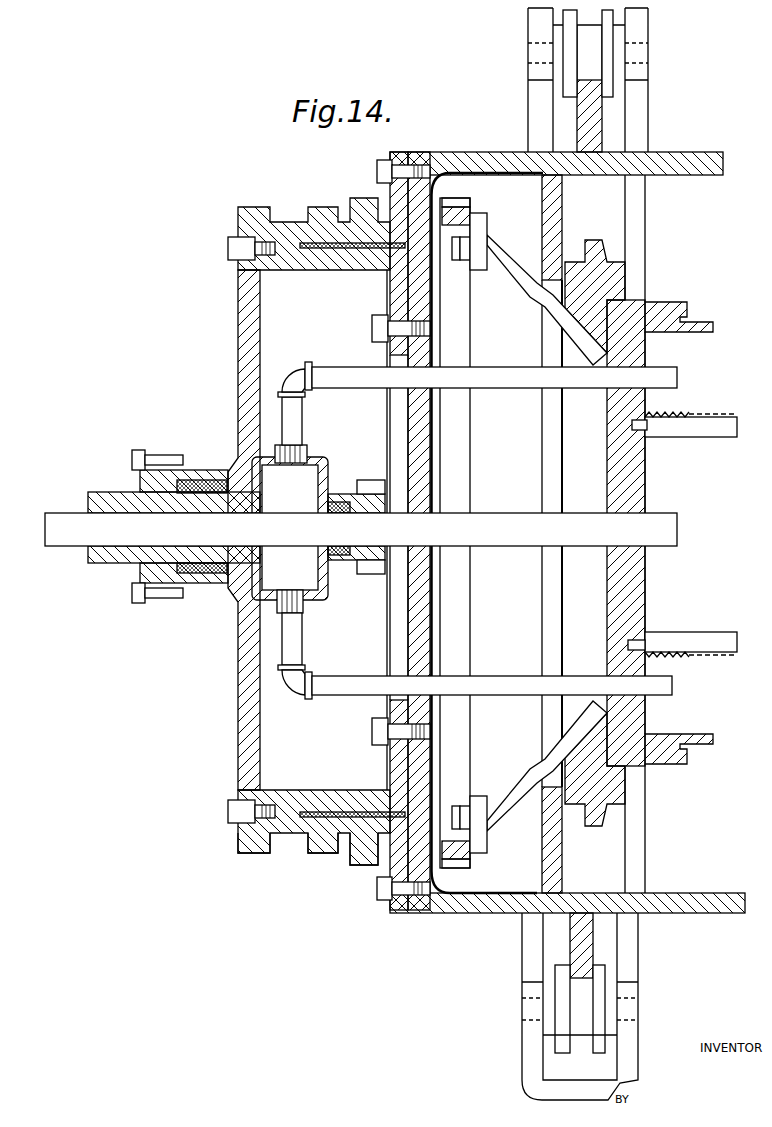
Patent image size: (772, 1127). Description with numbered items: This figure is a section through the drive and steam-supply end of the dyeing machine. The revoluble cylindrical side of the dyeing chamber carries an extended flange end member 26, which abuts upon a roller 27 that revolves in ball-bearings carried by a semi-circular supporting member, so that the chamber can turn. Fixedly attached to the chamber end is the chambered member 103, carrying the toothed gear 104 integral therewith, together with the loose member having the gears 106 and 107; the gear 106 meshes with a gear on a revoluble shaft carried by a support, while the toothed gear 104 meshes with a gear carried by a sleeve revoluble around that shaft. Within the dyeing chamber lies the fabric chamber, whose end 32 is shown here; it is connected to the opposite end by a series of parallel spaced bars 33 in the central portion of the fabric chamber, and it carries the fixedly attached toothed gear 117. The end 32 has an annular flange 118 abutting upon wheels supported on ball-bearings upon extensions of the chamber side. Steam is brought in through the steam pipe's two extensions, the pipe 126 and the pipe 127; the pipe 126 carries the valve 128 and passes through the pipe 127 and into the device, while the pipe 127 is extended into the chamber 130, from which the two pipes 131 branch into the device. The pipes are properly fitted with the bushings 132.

The extended flange end member 26 is at (600, 122).
The roller 27 is at (572, 38).
The end 32 is at (645, 583).
The parallel spaced bar 33 is at (712, 432).
The chambered member 103 is at (243, 315).
The toothed gear 104 is at (250, 855).
The gear 106 is at (297, 858).
The gear 107 is at (352, 868).
The toothed gear 117 is at (460, 860).
The annular flange 118 is at (602, 813).
The pipe 126 is at (72, 547).
The pipe 127 is at (112, 548).
The valve 128 is at (525, 1043).
The chamber 130 is at (290, 529).
The pipe 131 is at (356, 390).
The bushing 132 is at (199, 577).